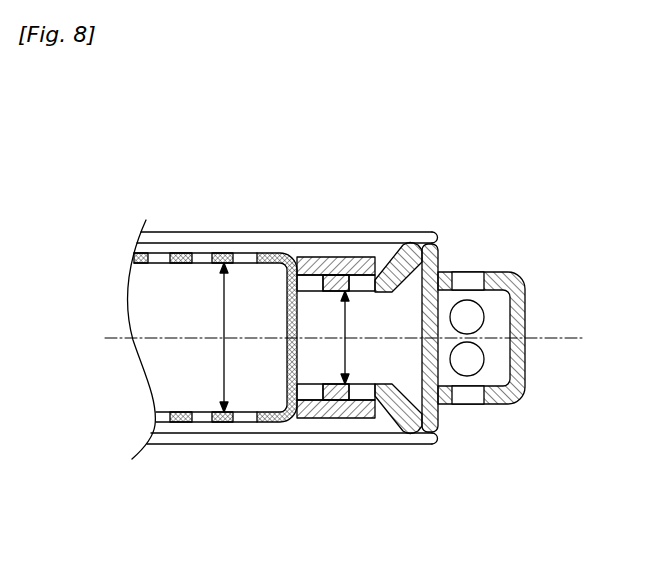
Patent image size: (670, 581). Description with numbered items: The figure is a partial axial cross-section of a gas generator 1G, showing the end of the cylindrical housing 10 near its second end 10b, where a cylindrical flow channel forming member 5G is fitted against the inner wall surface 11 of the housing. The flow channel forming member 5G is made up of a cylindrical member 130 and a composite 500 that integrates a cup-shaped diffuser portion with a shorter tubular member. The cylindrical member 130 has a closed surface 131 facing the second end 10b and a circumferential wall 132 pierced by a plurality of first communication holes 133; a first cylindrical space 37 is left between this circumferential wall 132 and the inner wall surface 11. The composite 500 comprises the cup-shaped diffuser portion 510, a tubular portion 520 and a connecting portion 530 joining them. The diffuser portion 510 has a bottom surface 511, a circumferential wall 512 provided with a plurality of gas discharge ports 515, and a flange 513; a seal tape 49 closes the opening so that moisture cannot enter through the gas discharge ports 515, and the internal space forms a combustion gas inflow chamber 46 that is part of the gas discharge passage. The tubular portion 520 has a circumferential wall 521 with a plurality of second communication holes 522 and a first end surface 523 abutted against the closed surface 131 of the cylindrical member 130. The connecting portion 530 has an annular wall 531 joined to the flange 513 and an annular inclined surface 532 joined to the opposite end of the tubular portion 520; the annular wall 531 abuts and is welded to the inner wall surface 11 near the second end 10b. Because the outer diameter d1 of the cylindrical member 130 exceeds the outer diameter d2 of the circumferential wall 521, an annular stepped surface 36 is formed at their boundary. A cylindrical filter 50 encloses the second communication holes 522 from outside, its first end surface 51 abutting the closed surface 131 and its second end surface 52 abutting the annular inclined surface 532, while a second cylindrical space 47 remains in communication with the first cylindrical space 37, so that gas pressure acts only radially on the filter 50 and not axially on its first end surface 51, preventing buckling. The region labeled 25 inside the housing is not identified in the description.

The cylindrical housing 10 is at (192, 232).
The second end of the cylindrical housing 10b is at (437, 438).
The inner wall surface of the cylindrical housing 11 is at (162, 237).
The circumferential wall of the cylindrical member 132 is at (172, 437).
The chamber 25 is at (174, 302).
The first end surface of the cylindrical filter 51 is at (285, 266).
The cylindrical member 130 is at (228, 250).
The closed surface 131 is at (282, 366).
The first communication holes 133 is at (200, 410).
The first cylindrical space 37 is at (204, 424).
The first end surface of the tubular portion 523 is at (266, 423).
The composite 500 is at (330, 258).
The circumferential wall of the tubular portion 521 is at (333, 388).
The second communication holes 522 is at (357, 383).
The second cylindrical space 47 is at (355, 423).
The annular stepped surface 36 is at (305, 421).
The tubular portion 520 is at (325, 402).
The cylindrical filter 50 is at (345, 434).
The second end surface of the cylindrical filter 52 is at (404, 382).
The annular inclined surface 532 is at (385, 255).
The connecting portion 530 is at (382, 432).
The flange of the diffuser portion 513 is at (440, 252).
The annular wall 531 is at (422, 240).
The cup-shaped diffuser portion 510 is at (538, 372).
The circumferential wall of the diffuser portion 512 is at (495, 273).
The gas discharge ports 515 is at (470, 406).
The bottom surface 511 is at (528, 305).
The seal tape 49 is at (420, 325).
The combustion gas inflow chamber 46 is at (401, 295).
The outer diameter of the cylindrical member d1 is at (222, 337).
The outer diameter of the circumferential wall of the tubular portion d2 is at (345, 337).
The cylindrical flow channel forming member 5G is at (307, 165).
The gas generator 1G is at (342, 212).